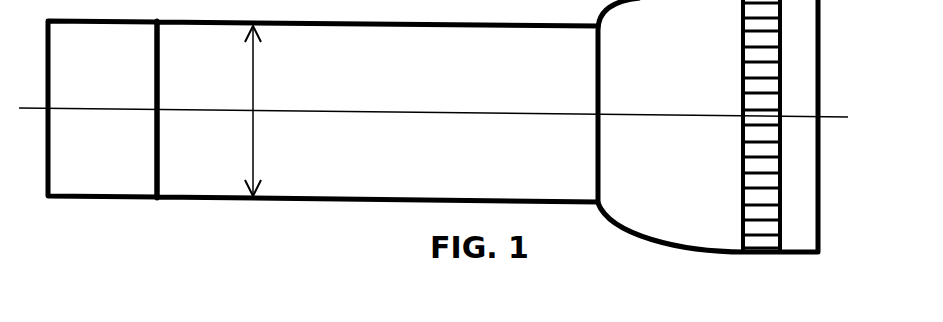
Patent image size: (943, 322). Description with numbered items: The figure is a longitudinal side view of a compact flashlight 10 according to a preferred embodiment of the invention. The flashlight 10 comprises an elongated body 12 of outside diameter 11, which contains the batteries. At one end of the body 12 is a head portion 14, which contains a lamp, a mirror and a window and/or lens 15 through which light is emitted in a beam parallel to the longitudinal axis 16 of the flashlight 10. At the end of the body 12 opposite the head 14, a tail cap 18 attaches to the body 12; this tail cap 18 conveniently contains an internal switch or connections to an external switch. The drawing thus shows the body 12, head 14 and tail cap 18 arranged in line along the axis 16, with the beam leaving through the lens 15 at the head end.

The compact flashlight 10 is at (211, 222).
The outside diameter 11 is at (255, 65).
The elongated body 12 is at (377, 111).
The head portion 14 is at (708, 126).
The window and/or lens 15 is at (822, 223).
The longitudinal axis 16 is at (413, 110).
The tail cap 18 is at (102, 109).